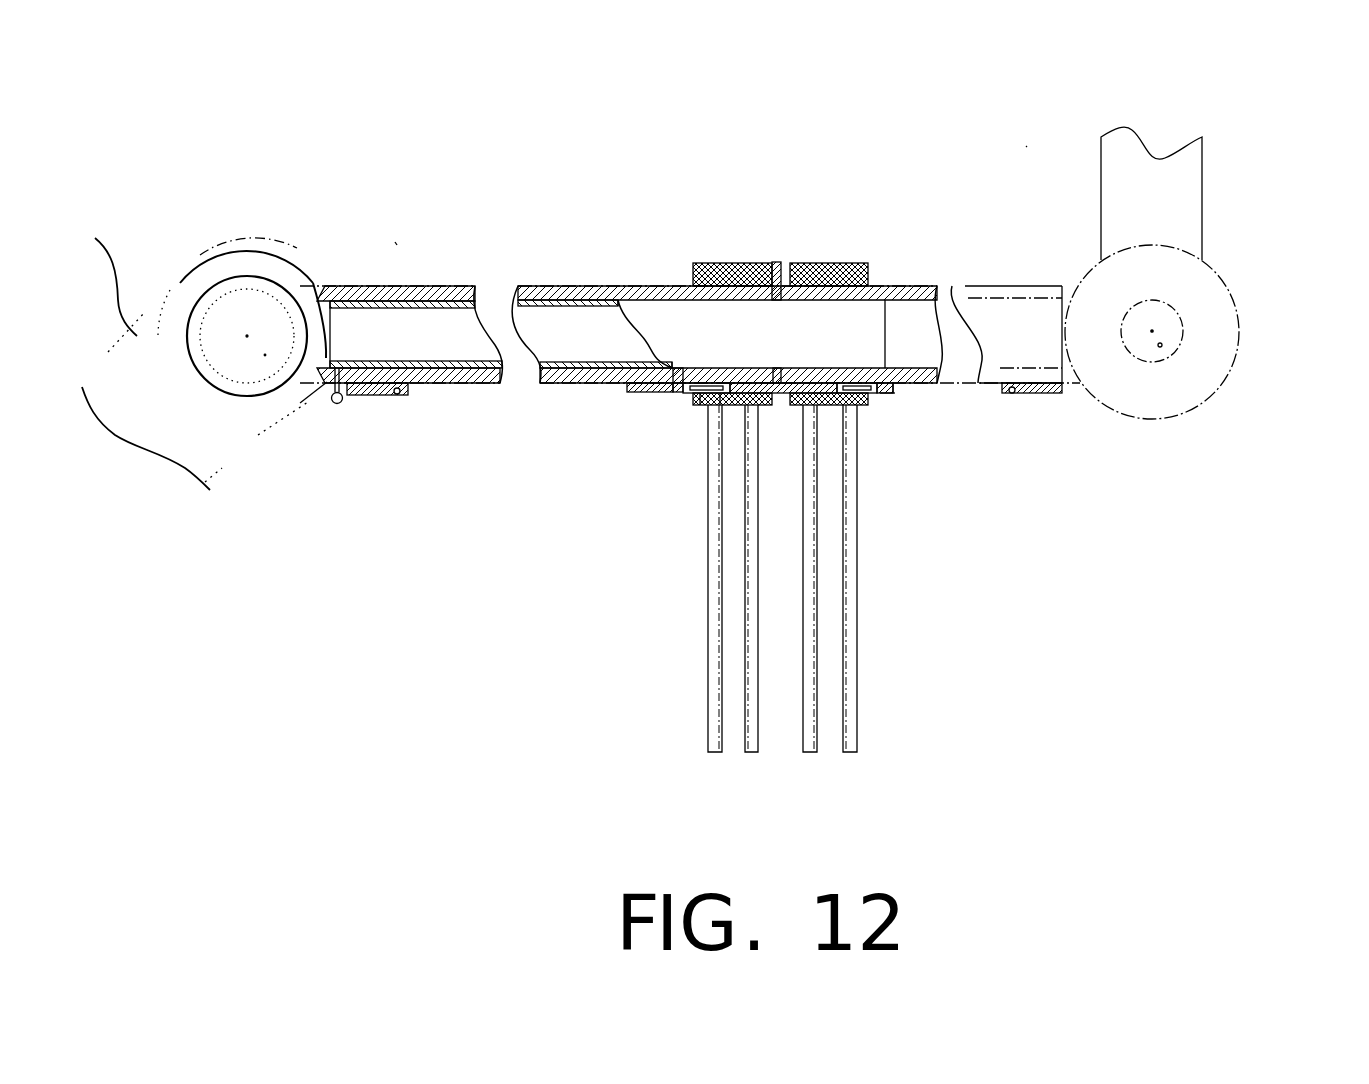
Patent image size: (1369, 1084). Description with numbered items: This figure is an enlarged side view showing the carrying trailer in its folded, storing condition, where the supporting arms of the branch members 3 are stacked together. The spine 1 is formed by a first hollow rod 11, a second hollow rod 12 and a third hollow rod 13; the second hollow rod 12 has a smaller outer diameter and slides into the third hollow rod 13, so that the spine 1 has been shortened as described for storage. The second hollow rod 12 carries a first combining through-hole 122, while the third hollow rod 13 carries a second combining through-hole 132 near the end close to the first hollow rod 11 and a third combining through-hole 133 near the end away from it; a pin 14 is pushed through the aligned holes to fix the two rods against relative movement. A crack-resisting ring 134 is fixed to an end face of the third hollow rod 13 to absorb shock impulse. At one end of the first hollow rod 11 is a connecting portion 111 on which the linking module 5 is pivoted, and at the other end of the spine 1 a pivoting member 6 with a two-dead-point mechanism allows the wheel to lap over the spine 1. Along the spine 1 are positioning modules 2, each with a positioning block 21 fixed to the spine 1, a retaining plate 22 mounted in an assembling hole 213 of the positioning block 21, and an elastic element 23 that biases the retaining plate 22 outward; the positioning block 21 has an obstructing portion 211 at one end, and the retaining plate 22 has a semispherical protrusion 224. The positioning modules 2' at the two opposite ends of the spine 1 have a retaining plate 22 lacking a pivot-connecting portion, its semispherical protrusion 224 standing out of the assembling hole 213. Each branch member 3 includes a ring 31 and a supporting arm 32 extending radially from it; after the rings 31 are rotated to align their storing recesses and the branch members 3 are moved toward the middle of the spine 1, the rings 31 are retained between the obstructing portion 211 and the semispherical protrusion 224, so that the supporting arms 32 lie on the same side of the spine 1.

The spine 1 is at (1028, 146).
The positioning module 2 is at (939, 485).
The positioning module 2' is at (723, 490).
The branch member 3 is at (397, 240).
The linking module 5 is at (1195, 216).
The pivoting member 6 is at (185, 347).
The first hollow rod 11 is at (893, 287).
The second hollow rod 12 is at (540, 305).
The third hollow rod 13 is at (430, 290).
The pin 14 is at (338, 405).
The positioning block 21 is at (627, 386).
The retaining plate 22 is at (702, 410).
The elastic element 23 is at (723, 407).
The ring 31 is at (730, 286).
The supporting arm 32 is at (710, 642).
The connecting portion 111 is at (1173, 392).
The first combining through-hole 122 is at (330, 365).
The second combining through-hole 132 is at (662, 364).
The third combining through-hole 133 is at (327, 386).
The crack-resisting ring 134 is at (777, 287).
The obstructing portion 211 is at (905, 390).
The assembling hole 213 is at (708, 368).
The semispherical protrusion 224 is at (398, 396).